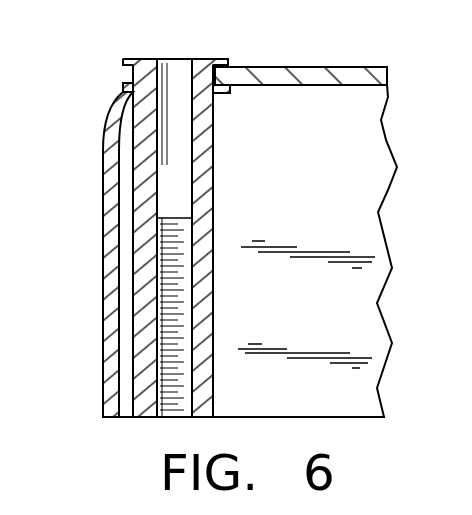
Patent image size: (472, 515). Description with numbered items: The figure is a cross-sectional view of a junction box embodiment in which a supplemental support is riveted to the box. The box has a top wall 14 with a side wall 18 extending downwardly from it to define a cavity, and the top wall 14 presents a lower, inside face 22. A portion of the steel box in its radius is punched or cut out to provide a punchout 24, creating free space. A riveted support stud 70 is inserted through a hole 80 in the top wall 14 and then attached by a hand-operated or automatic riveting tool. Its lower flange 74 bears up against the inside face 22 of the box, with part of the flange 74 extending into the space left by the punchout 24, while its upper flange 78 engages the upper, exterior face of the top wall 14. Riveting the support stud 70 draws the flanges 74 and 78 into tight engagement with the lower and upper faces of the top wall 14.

The top wall 14 is at (359, 67).
The side wall 18 is at (103, 307).
The lower face 22 is at (342, 85).
The punchout 24 is at (119, 95).
The riveted support stud 70 is at (220, 230).
The lower flange 74 is at (231, 93).
The upper flange 78 is at (121, 62).
The hole 80 is at (205, 58).